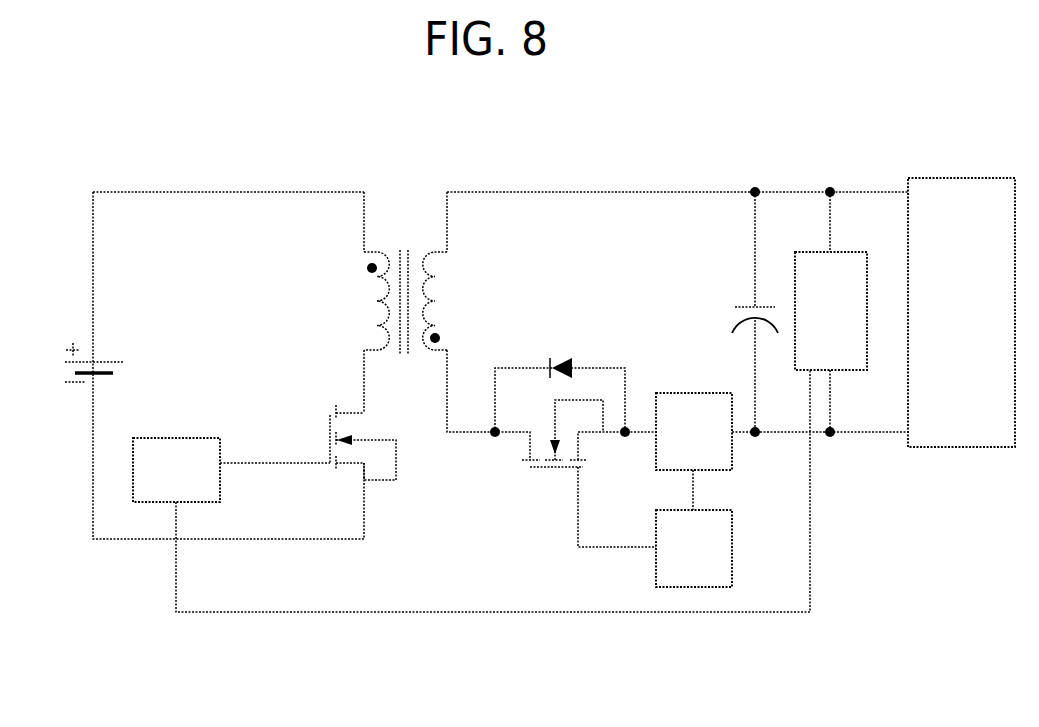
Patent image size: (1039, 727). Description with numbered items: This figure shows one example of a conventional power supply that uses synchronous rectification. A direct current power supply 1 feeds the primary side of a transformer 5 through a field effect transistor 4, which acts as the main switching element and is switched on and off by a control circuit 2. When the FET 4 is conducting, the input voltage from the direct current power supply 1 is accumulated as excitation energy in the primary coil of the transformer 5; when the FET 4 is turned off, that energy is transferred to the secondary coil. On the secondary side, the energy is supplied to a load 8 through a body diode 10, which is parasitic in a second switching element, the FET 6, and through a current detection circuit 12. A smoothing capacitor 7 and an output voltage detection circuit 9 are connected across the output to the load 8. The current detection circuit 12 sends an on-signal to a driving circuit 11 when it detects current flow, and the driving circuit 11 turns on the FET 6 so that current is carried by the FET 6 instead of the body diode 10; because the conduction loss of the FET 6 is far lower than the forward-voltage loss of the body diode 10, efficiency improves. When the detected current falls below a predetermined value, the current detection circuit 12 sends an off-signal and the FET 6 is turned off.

The direct current power supply 1 is at (72, 386).
The control circuit 2 is at (166, 438).
The field effect transistor 4 is at (328, 424).
The transformer 5 is at (402, 248).
The FET 6 is at (549, 473).
The smoothing capacitor 7 is at (733, 316).
The load 8 is at (950, 176).
The output voltage detection circuit 9 is at (843, 372).
The body diode 10 is at (553, 356).
The driving circuit 11 is at (653, 563).
The current detection circuit 12 is at (691, 392).